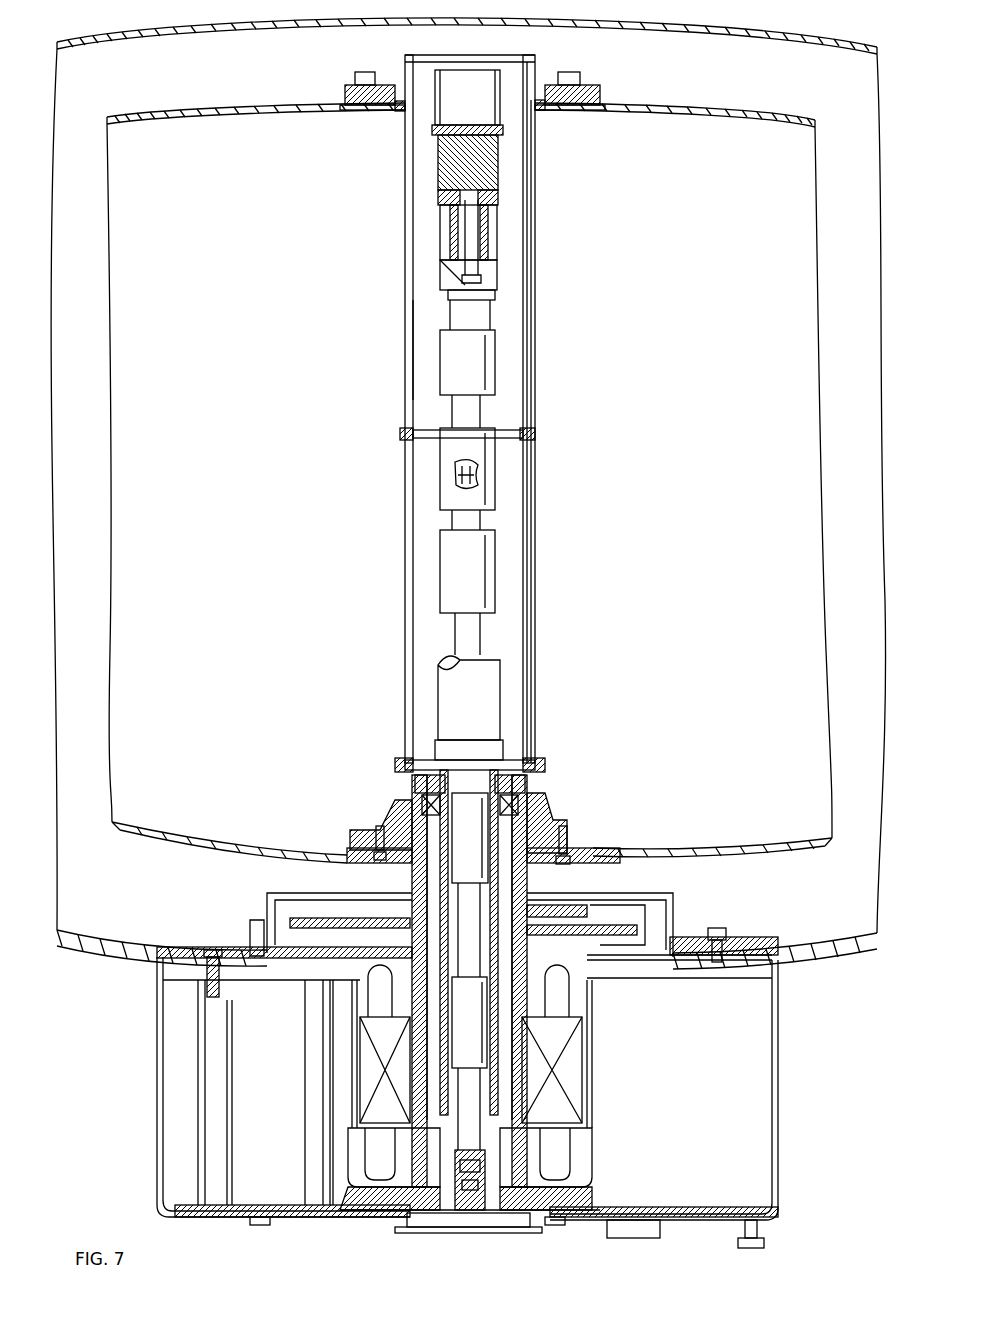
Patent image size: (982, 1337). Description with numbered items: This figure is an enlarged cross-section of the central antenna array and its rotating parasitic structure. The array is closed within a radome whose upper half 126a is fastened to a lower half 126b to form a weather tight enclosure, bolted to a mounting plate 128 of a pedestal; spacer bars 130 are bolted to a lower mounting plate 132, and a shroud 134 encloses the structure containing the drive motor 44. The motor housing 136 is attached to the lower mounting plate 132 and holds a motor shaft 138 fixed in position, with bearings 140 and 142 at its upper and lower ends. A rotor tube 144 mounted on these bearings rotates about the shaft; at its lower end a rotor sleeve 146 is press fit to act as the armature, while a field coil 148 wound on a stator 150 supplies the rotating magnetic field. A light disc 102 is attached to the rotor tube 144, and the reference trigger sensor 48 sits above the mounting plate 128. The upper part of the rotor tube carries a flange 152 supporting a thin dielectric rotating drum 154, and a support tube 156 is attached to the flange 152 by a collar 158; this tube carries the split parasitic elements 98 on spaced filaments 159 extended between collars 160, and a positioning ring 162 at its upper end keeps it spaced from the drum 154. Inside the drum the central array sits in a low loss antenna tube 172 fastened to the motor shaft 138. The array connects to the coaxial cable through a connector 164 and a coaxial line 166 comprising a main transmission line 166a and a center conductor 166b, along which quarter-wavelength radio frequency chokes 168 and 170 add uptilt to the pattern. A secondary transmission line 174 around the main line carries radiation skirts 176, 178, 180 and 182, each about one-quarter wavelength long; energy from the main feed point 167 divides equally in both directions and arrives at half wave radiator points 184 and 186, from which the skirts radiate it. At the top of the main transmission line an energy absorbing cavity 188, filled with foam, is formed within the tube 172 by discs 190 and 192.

The upper half of radome 126a is at (270, 30).
The lower half of radome 126b is at (175, 935).
The rotating drum 154 is at (275, 835).
The positioning ring 162 is at (398, 85).
The collars 160 is at (412, 130).
The parasitic elements 98 is at (527, 335).
The spaced filaments 159 is at (527, 465).
The support tube 156 is at (535, 690).
The disc 190 is at (456, 128).
The energy absorbing cavity 188 is at (495, 155).
The disc 192 is at (490, 190).
The main transmission line 166a is at (480, 238).
The center conductor 166b is at (478, 272).
The radiation skirt 176 is at (435, 272).
The half wave radiator point 184 is at (425, 297).
The radiation skirt 178 is at (445, 348).
The secondary transmission line 174 is at (465, 420).
The radiation skirt 180 is at (442, 500).
The main feed point 167 is at (455, 475).
The half wave radiator point 186 is at (432, 542).
The radiation skirt 182 is at (447, 582).
The coaxial line 166 is at (440, 628).
The antenna tube 172 is at (435, 175).
The bearing 140 is at (412, 792).
The rotor tube 144 is at (410, 933).
The collar 158 is at (550, 812).
The flange 152 is at (352, 856).
The radio frequency choke 170 is at (472, 880).
The radio frequency choke 168 is at (470, 1020).
The connector 164 is at (480, 1215).
The reference trigger sensor 48 is at (298, 885).
The light disc 102 is at (330, 920).
The shroud 134 is at (160, 1060).
The mounting plate 128 is at (292, 987).
The spacer bars 130 is at (313, 1072).
The lower mounting plate 132 is at (250, 1205).
The rotor sleeve 146 is at (410, 1037).
The stator 150 is at (370, 1055).
The bearing 142 is at (430, 1120).
The field coil 148 is at (565, 1150).
The motor housing 136 is at (365, 1205).
The motor shaft 138 is at (440, 1227).
The drive motor 44 is at (605, 1090).